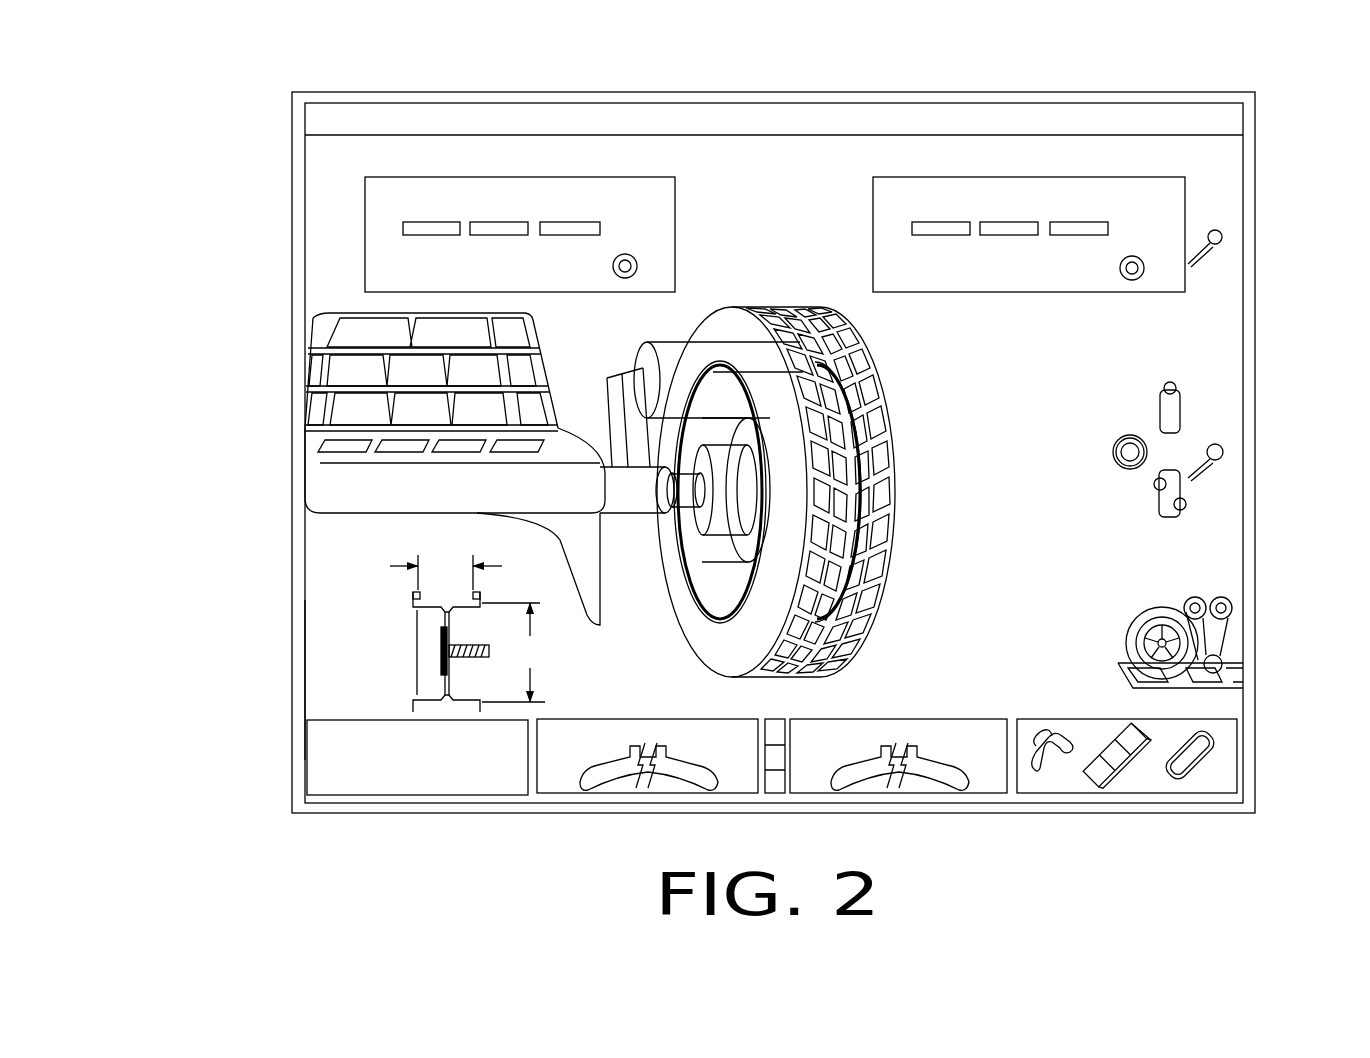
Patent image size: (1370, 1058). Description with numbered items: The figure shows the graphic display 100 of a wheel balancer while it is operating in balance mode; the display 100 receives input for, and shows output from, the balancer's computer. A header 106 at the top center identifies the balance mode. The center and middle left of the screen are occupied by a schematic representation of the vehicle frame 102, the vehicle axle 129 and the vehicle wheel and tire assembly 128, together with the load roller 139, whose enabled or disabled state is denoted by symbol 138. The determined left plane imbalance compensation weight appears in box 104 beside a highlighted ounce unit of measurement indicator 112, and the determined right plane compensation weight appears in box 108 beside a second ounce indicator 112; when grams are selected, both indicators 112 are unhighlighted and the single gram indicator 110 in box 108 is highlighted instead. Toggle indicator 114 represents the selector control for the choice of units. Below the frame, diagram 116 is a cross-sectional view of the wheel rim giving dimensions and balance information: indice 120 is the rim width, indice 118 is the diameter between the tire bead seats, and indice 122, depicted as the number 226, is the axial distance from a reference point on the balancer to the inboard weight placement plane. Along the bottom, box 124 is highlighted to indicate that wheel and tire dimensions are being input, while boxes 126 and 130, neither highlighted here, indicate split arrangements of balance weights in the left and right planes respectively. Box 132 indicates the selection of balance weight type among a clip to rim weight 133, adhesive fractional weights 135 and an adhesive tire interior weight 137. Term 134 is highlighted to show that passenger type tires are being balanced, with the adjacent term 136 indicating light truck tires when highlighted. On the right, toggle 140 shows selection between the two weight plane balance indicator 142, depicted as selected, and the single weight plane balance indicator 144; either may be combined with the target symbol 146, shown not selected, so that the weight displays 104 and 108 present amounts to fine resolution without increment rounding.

The graphic display 100 is at (257, 145).
The vehicle frame 102 is at (355, 303).
The left plane weight box 104 is at (560, 172).
The header 106 is at (830, 116).
The right plane weight box 108 is at (935, 172).
The gram indicator 110 is at (1138, 200).
The ounce unit of measurement indicator 112 is at (597, 264).
The toggle indicator 114 is at (1225, 238).
The wheel rim diagram 116 is at (393, 598).
The bead seat diameter indice 118 is at (548, 628).
The rim width indice 120 is at (412, 547).
The inboard plane distance indice 122 is at (312, 680).
The set dimensions box 124 is at (295, 770).
The left plane split weight box 126 is at (625, 790).
The vehicle wheel and tire assembly 128 is at (722, 640).
The vehicle axle 129 is at (625, 525).
The right plane split weight box 130 is at (912, 800).
The weight type selection box 132 is at (1087, 800).
The clip to rim weight 133 is at (1043, 785).
The passenger tires term 134 is at (1085, 672).
The adhesive fractional weights 135 is at (1120, 782).
The LT tires selection 136 is at (1080, 592).
The adhesive tire interior weight 137 is at (1212, 765).
The load roller symbol 138 is at (1210, 588).
The load roller 139 is at (678, 332).
The weight plane toggle 140 is at (1228, 452).
The two weight plane balance indicator 142 is at (1200, 505).
The single weight plane balance indicator 144 is at (1190, 400).
The target symbol 146 is at (1130, 432).
The displayed distance number 226 is at (417, 680).